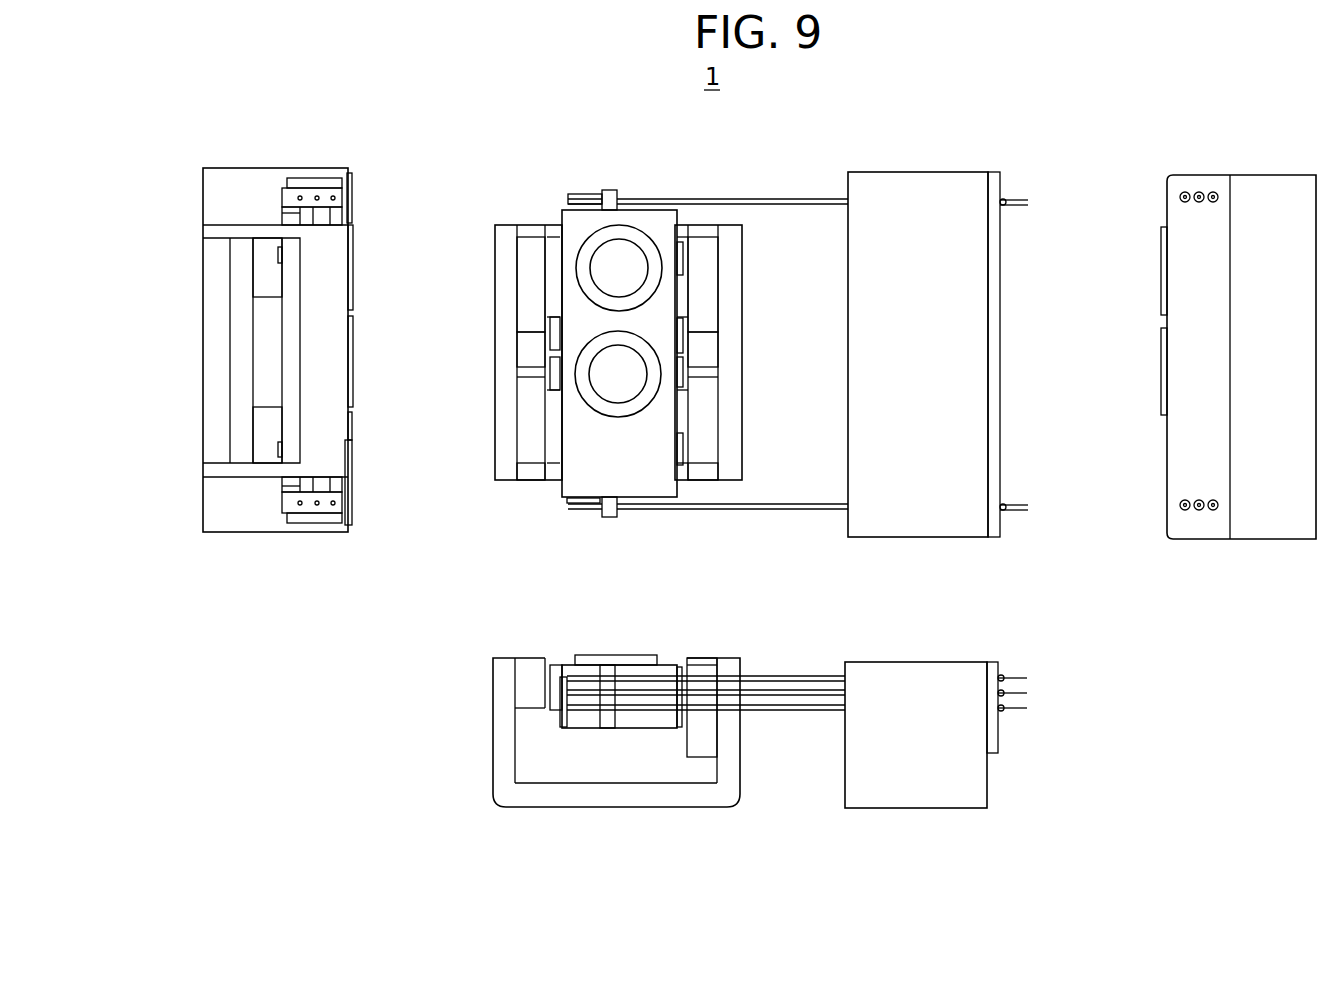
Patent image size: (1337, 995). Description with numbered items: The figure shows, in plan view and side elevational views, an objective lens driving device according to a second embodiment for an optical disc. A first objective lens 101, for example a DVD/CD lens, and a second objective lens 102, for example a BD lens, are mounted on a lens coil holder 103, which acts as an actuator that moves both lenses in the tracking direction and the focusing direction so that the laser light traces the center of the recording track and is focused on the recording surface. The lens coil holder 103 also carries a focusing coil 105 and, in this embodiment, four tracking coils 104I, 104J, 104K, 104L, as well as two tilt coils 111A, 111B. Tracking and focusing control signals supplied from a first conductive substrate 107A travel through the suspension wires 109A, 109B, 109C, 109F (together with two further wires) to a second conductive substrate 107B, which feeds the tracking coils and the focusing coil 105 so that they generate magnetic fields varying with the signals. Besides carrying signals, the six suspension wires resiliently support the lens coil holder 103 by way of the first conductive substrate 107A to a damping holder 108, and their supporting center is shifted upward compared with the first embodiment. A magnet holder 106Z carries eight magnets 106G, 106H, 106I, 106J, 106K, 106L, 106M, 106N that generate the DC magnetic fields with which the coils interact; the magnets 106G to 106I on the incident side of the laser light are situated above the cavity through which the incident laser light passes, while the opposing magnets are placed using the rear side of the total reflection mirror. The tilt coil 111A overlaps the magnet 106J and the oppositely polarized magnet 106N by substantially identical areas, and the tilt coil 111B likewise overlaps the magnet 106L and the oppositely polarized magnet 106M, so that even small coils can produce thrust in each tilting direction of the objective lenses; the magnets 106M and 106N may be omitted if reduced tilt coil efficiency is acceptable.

The first objective lens 101 is at (350, 243).
The second objective lens 102 is at (350, 407).
The lens coil holder 103 is at (295, 385).
The focusing coil 105 is at (322, 218).
The magnet 106G is at (528, 273).
The magnet 106H is at (530, 350).
The magnet 106I is at (530, 463).
The magnet 106J is at (705, 462).
The magnet 106K is at (710, 358).
The magnet 106L is at (707, 268).
The magnet 106M is at (262, 287).
The magnet 106N is at (267, 423).
The magnet holder 106Z is at (217, 233).
The tracking coil 104I is at (553, 328).
The tracking coil 104J is at (553, 377).
The tracking coil 104K is at (697, 378).
The tracking coil 104L is at (693, 325).
The first conductive substrate 107A is at (295, 185).
The second conductive substrate 107B is at (282, 495).
The damping holder 108 is at (233, 192).
The suspension wire 109A is at (797, 512).
The suspension wire 109B is at (827, 690).
The suspension wire 109C is at (790, 712).
The suspension wire 109F is at (818, 198).
The tilt coil 111A is at (280, 448).
The tilt coil 111B is at (278, 255).